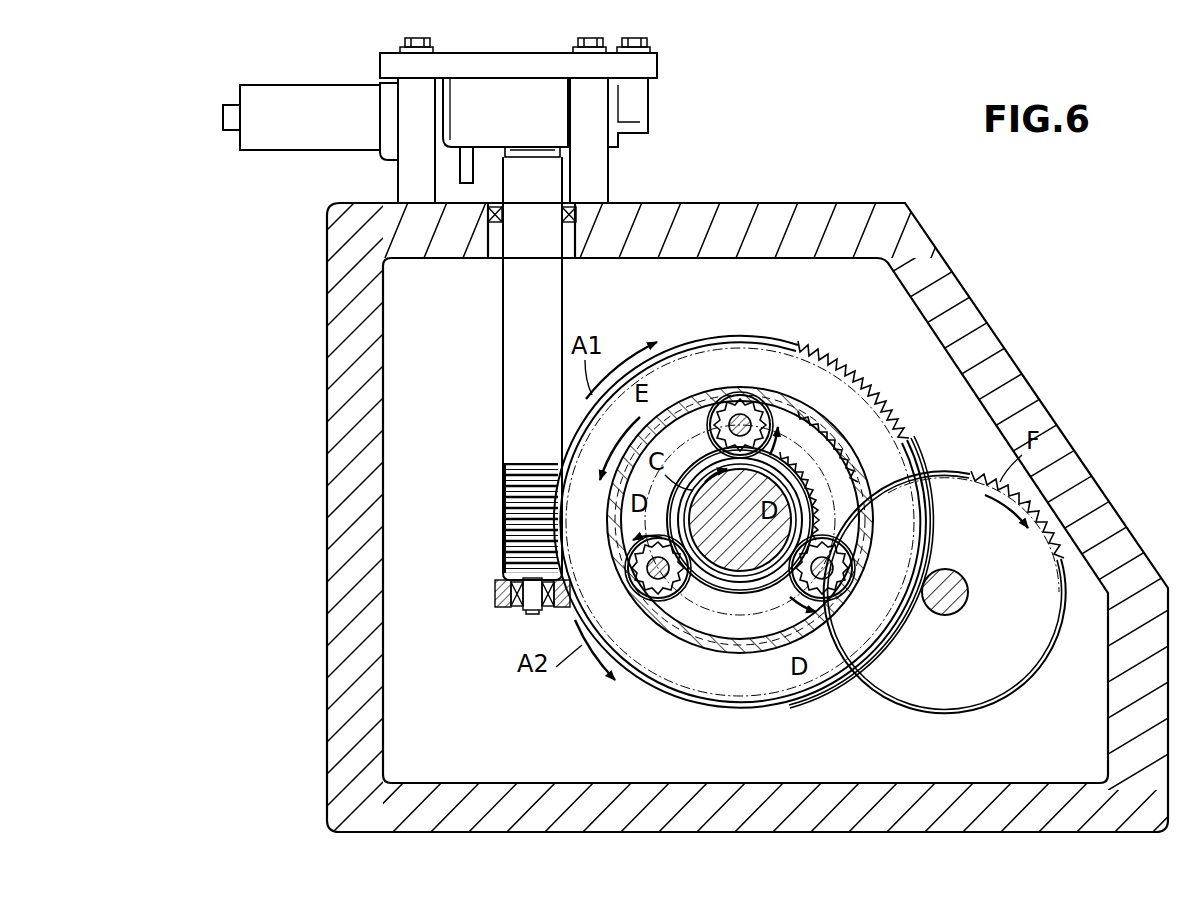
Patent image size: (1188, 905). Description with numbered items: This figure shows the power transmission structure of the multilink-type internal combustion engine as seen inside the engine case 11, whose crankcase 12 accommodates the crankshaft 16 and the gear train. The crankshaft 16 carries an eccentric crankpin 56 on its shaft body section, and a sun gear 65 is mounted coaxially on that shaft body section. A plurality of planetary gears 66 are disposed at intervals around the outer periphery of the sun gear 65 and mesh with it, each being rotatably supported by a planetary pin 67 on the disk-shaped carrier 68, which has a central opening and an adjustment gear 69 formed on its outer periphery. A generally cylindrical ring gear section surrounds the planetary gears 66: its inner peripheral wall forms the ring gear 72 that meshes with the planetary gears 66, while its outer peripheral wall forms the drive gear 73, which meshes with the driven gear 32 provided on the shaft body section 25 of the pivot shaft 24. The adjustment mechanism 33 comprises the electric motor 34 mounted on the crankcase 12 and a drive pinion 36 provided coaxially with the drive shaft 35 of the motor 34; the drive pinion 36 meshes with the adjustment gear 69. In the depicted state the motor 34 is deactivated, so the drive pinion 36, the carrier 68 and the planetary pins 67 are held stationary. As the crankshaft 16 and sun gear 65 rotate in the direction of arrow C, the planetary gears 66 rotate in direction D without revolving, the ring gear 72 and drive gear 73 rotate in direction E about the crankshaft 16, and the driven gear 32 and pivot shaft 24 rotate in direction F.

The engine case 11 is at (325, 372).
The crankcase 12 is at (330, 478).
The crankshaft 16 is at (700, 600).
The pivot shaft 24 is at (953, 618).
The shaft body section 25 is at (962, 592).
The driven gear 32 is at (1048, 488).
The adjustment mechanism 33 is at (657, 100).
The electric motor 34 is at (530, 88).
The drive shaft 35 is at (522, 148).
The drive pinion 36 is at (500, 505).
The crankpin 56 is at (750, 590).
The sun gear 65 is at (808, 472).
The planetary gears 66 is at (745, 398).
The planetary pins 67 is at (718, 412).
The carrier 68 is at (726, 345).
The adjustment gear 69 is at (862, 378).
The ring gear 72 is at (902, 470).
The drive gear 73 is at (893, 416).